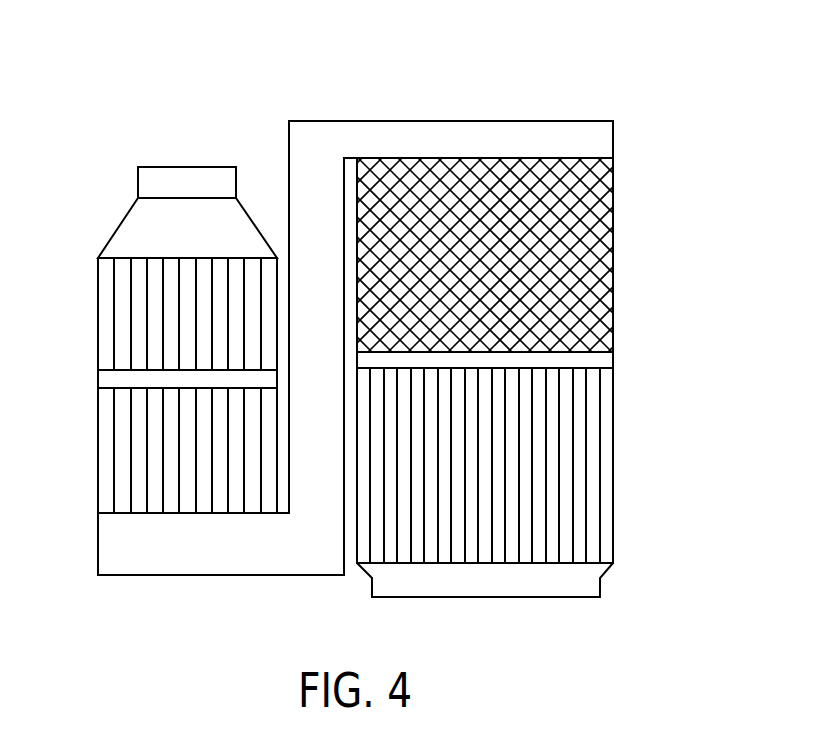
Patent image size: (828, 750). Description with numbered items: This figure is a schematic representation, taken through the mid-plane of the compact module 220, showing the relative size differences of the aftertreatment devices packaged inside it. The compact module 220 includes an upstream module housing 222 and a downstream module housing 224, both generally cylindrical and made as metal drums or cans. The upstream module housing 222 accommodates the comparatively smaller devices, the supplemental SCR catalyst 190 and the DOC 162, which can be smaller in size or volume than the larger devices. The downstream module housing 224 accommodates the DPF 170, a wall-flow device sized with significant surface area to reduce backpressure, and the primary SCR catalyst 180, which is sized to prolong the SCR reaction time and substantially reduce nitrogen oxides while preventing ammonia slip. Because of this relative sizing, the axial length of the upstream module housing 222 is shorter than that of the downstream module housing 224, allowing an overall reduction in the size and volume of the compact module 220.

The compact module 220 is at (334, 86).
The supplemental SCR catalyst 190 is at (122, 320).
The upstream module housing 222 is at (98, 378).
The DOC 162 is at (112, 458).
The DPF 170 is at (573, 247).
The downstream module housing 224 is at (613, 358).
The primary SCR catalyst 180 is at (595, 493).